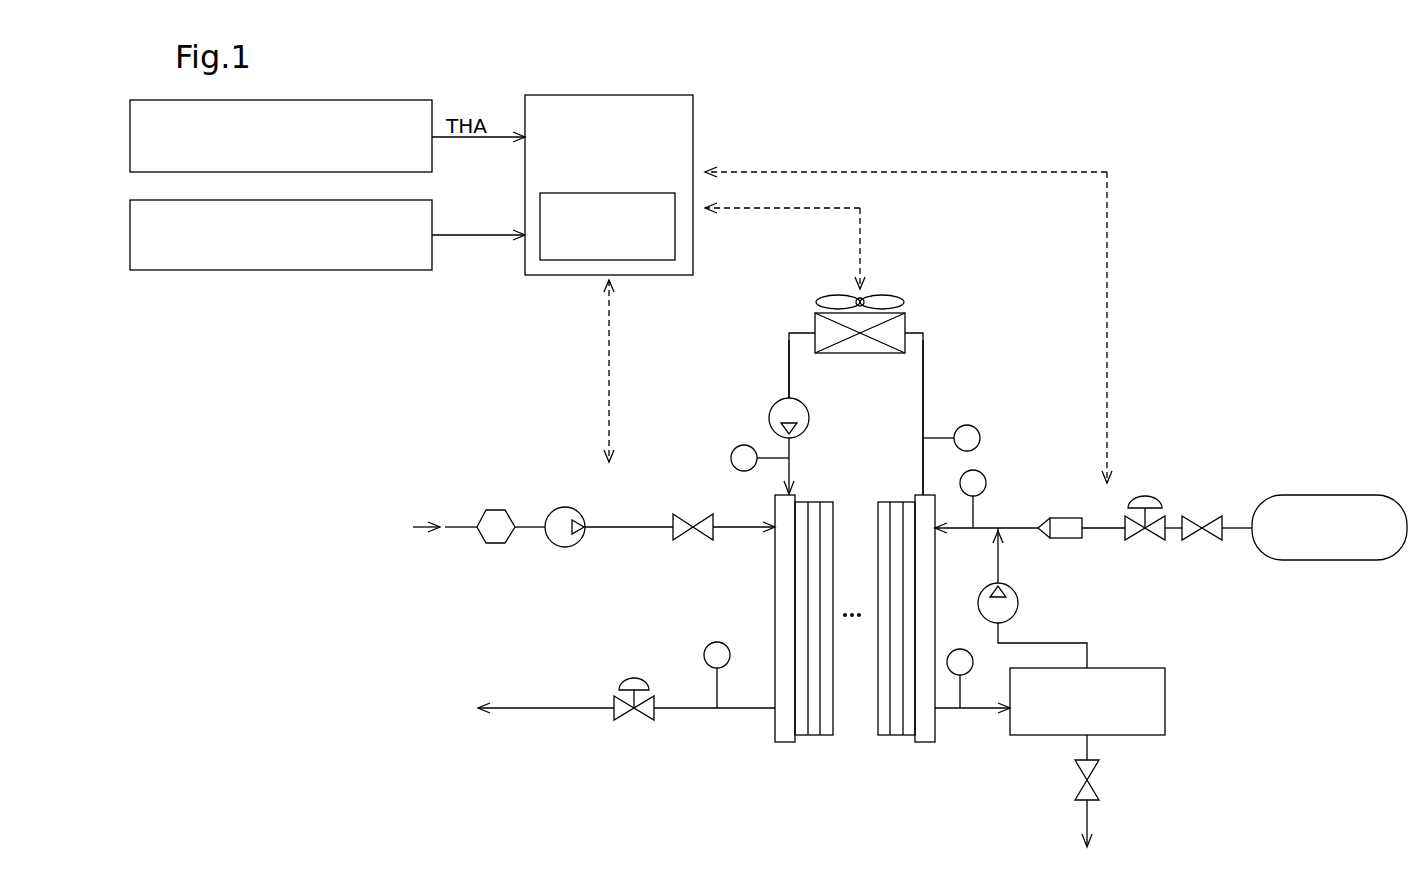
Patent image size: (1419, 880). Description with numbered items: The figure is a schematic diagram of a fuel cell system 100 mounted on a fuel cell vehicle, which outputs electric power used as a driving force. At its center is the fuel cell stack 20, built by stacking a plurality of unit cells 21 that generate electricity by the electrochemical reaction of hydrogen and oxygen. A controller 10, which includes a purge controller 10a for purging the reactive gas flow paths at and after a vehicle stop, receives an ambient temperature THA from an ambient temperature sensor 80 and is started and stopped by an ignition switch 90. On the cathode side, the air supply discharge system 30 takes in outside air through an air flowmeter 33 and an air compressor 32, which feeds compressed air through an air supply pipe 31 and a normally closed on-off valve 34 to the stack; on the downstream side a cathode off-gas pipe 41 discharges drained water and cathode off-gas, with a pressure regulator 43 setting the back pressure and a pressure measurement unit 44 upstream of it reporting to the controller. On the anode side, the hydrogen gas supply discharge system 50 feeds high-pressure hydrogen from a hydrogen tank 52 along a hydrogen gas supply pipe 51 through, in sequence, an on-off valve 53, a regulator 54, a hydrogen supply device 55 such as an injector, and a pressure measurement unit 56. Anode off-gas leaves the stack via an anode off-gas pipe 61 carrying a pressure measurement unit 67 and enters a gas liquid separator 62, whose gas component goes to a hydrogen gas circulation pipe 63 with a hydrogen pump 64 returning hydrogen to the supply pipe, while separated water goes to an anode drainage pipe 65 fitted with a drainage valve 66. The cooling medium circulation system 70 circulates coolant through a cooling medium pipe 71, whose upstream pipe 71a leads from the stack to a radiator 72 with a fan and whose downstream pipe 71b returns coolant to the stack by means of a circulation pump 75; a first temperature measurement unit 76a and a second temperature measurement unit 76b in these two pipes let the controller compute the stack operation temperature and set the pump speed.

The fuel cell system 100 is at (1185, 162).
The controller 10 is at (634, 185).
The purge controller 10a is at (636, 193).
The ambient temperature sensor 80 is at (292, 104).
The ignition switch 90 is at (292, 204).
The fuel cell stack 20 is at (855, 652).
The unit cell 21 is at (813, 737).
The air supply discharge system 30 is at (516, 506).
The air supply pipe 31 is at (638, 525).
The air compressor 32 is at (581, 511).
The air flowmeter 33 is at (503, 510).
The on-off valve 34 is at (686, 513).
The cathode off-gas pipe 41 is at (530, 706).
The pressure regulator 43 is at (628, 676).
The pressure measurement unit 44 is at (722, 642).
The hydrogen gas supply discharge system 50 is at (1171, 490).
The hydrogen gas supply pipe 51 is at (1020, 526).
The hydrogen tank 52 is at (1310, 495).
The on-off valve 53 is at (1190, 514).
The regulator 54 is at (1138, 495).
The hydrogen supply device 55 is at (1068, 540).
The pressure measurement unit 56 is at (985, 477).
The anode off-gas pipe 61 is at (965, 714).
The gas liquid separator 62 is at (1112, 668).
The hydrogen gas circulation pipe 63 is at (1030, 643).
The hydrogen pump 64 is at (1015, 594).
The anode drainage pipe 65 is at (1092, 812).
The drainage valve 66 is at (1100, 780).
The pressure measurement unit 67 is at (951, 650).
The cooling medium circulation system 70 is at (850, 362).
The cooling medium pipe 71 is at (789, 331).
The upstream pipe 71a is at (924, 378).
The downstream pipe 71b is at (789, 364).
The radiator 72 is at (905, 314).
The circulation pump 75 is at (810, 419).
The first temperature measurement unit 76a is at (968, 425).
The second temperature measurement unit 76b is at (738, 446).